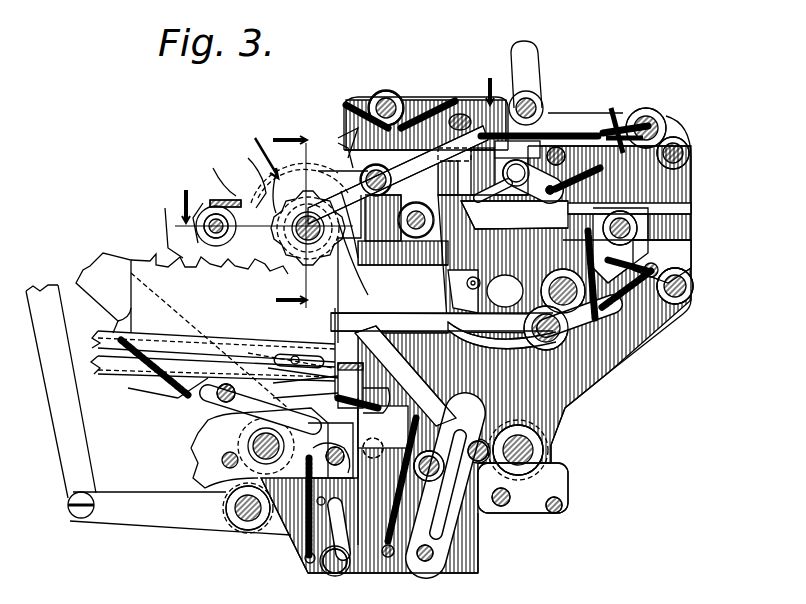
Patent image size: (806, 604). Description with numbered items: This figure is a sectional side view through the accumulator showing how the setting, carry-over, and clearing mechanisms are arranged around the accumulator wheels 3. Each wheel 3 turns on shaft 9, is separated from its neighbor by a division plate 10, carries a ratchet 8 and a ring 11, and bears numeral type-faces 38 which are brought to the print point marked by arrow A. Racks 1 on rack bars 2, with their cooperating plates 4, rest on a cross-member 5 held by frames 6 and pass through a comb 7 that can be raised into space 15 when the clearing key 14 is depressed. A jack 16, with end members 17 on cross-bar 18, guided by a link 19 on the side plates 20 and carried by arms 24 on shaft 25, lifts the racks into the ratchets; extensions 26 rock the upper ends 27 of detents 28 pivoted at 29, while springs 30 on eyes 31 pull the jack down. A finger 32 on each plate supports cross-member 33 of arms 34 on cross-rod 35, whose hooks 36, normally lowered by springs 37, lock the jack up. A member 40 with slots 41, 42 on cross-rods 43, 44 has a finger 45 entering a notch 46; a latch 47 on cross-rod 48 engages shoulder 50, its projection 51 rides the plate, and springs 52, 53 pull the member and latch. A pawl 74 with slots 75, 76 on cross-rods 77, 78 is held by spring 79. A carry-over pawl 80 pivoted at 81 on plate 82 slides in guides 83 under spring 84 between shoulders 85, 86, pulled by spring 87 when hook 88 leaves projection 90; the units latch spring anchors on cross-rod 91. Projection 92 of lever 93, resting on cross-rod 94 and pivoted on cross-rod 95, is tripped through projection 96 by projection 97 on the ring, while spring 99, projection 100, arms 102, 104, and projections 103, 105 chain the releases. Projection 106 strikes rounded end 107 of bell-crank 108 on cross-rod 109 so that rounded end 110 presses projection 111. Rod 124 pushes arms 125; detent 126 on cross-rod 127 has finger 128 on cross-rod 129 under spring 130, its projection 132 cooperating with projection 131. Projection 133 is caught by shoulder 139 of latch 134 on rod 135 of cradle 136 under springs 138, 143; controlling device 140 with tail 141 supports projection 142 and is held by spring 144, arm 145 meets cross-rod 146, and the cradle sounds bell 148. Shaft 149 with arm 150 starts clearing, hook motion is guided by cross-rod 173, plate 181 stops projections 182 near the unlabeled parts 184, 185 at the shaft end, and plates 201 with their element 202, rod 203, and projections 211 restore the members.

The rack 1 is at (180, 210).
The rack bar 2 is at (180, 287).
The accumulator wheel 3 is at (280, 189).
The plate 4 is at (174, 221).
The supporting cross-member 5 is at (271, 370).
The frame 6 is at (305, 172).
The comb 7 is at (296, 335).
The accumulator ratchet 8 is at (275, 215).
The shaft 9 is at (280, 231).
The division plate 10 is at (235, 246).
The ring 11 is at (326, 187).
The clearing key 14 is at (65, 419).
The space 15 is at (240, 269).
The jack 16 is at (350, 315).
The end member 17 is at (347, 386).
The cross-bar 18 is at (337, 447).
The link 19 is at (387, 409).
The side plate 20 is at (560, 392).
The arm 24 is at (387, 459).
The shaft 25 is at (490, 460).
The extension 26 is at (380, 550).
The upper end 27 is at (373, 448).
The detent 28 is at (333, 532).
The pivot 29 is at (335, 561).
The spring 30 is at (292, 527).
The eye 31 is at (300, 556).
The finger 32 is at (292, 414).
The cross-member 33 is at (290, 160).
The arm 34 is at (237, 407).
The cross-rod 35 is at (208, 385).
The hook 36 is at (380, 391).
The spring 37 is at (158, 385).
The type-face 38 is at (250, 172).
The member 40 is at (450, 442).
The slot 41 is at (384, 339).
The slot 42 is at (455, 512).
The cross-rod 43 is at (439, 401).
The cross-rod 44 is at (428, 548).
The finger 45 is at (231, 290).
The notch 46 is at (450, 336).
The latch 47 is at (495, 321).
The cross-rod 48 is at (552, 338).
The shoulder 50 is at (404, 338).
The projection 51 is at (318, 316).
The spring 52 is at (425, 525).
The spring 53 is at (590, 320).
The pawl 74 is at (435, 131).
The slot 75 is at (386, 175).
The slot 76 is at (430, 100).
The cross-rod 77 is at (330, 124).
The cross-rod 78 is at (462, 95).
The spring 79 is at (440, 92).
The carry-over pawl 80 is at (338, 150).
The pivot 81 is at (516, 173).
The plate 82 is at (493, 187).
The guide 83 is at (640, 210).
The spring 84 is at (559, 197).
The shoulder 85 is at (657, 189).
The shoulder 86 is at (675, 200).
The spring 87 is at (580, 115).
The hook 88 is at (600, 211).
The projection 90 is at (535, 202).
The cross-rod 91 is at (650, 295).
The projection 92 is at (507, 299).
The lever 93 is at (468, 185).
The cross-rod 94 is at (450, 299).
The cross-rod 95 is at (437, 277).
The projection 96 is at (385, 295).
The projection 97 is at (351, 291).
The spring 99 is at (625, 255).
The projection 100 is at (504, 278).
The arm 102 is at (425, 295).
The projection 103 is at (388, 275).
The arm 104 is at (411, 147).
The projection 105 is at (455, 154).
The projection 106 is at (683, 180).
The rounded end 107 is at (683, 190).
The bell-crank 108 is at (675, 264).
The cross-rod 109 is at (686, 279).
The rounded end 110 is at (612, 308).
The projection 111 is at (630, 310).
The rod 124 is at (556, 162).
The arm 125 is at (592, 186).
The detent 126 is at (358, 88).
The cross-rod 127 is at (378, 90).
The finger 128 is at (418, 88).
The cross-rod 129 is at (405, 95).
The spring 130 is at (344, 94).
The projection 131 is at (378, 144).
The projection 132 is at (340, 96).
The projection 133 is at (608, 115).
The latch 134 is at (595, 118).
The rod 135 is at (655, 118).
The cradle 136 is at (624, 188).
The spring 138 is at (615, 125).
The shoulder 139 is at (600, 105).
The controlling device 140 is at (520, 48).
The tail 141 is at (570, 105).
The projection 142 is at (545, 105).
The spring 143 is at (620, 130).
The spring 144 is at (485, 79).
The arm 145 is at (668, 140).
The cross-rod 146 is at (683, 160).
The bell 148 is at (489, 339).
The shaft 149 is at (225, 498).
The arm 150 is at (125, 503).
The cross-rod 173 is at (540, 440).
The plate 181 is at (215, 178).
The projection 182 is at (250, 190).
The spring 184 is at (218, 194).
The hub 185 is at (200, 230).
The plate 201 is at (514, 497).
The pin 202 is at (555, 495).
The rod 203 is at (425, 468).
The projection 211 is at (482, 445).
The arrow A is at (238, 119).